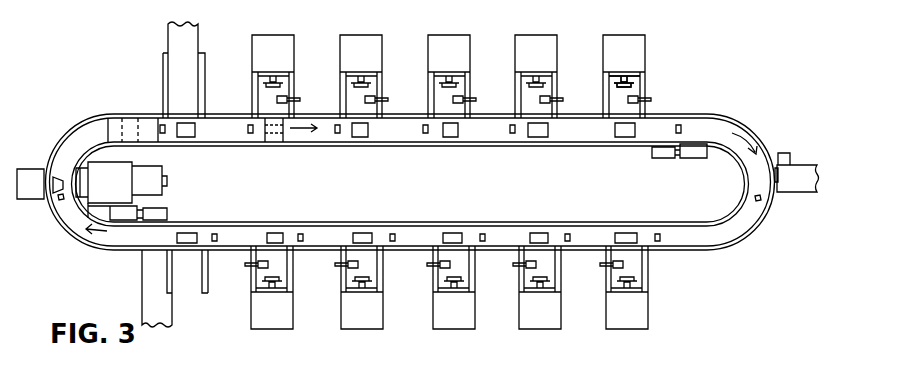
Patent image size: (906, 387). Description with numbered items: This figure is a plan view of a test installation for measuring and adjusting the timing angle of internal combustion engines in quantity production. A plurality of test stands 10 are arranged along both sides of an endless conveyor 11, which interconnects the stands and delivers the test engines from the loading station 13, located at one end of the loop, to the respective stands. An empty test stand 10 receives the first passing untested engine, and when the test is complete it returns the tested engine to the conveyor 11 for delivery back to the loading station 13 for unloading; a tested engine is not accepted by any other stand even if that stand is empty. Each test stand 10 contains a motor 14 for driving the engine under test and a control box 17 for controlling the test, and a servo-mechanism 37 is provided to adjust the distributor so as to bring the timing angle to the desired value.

The test stand 10 is at (657, 28).
The conveyor 11 is at (398, 134).
The loading station 13 is at (795, 170).
The motor 14 is at (639, 74).
The control box 17 is at (297, 42).
The servo-mechanism 37 is at (635, 95).